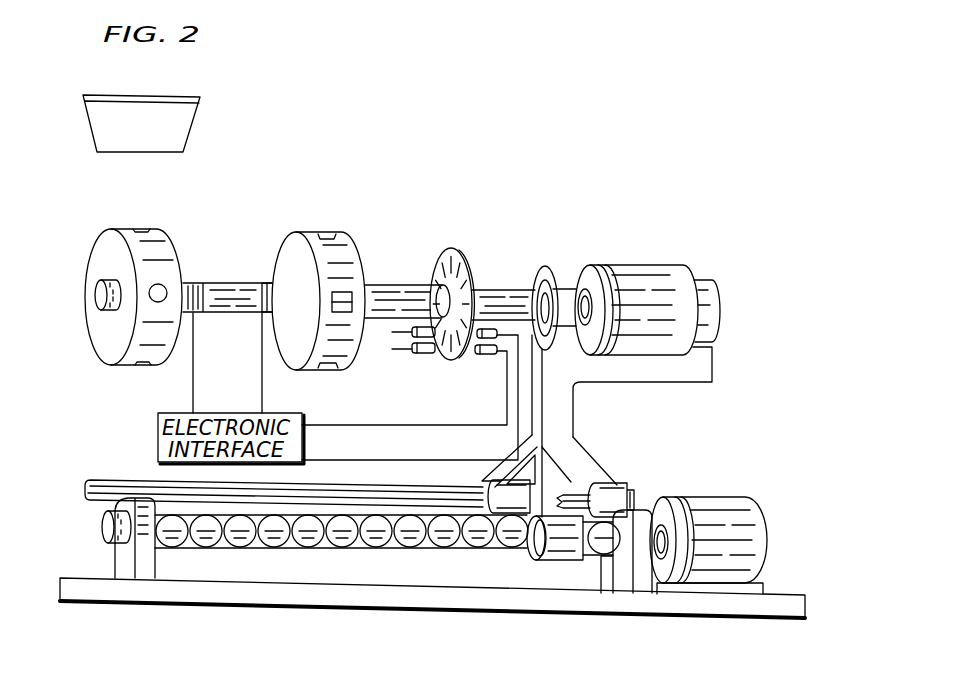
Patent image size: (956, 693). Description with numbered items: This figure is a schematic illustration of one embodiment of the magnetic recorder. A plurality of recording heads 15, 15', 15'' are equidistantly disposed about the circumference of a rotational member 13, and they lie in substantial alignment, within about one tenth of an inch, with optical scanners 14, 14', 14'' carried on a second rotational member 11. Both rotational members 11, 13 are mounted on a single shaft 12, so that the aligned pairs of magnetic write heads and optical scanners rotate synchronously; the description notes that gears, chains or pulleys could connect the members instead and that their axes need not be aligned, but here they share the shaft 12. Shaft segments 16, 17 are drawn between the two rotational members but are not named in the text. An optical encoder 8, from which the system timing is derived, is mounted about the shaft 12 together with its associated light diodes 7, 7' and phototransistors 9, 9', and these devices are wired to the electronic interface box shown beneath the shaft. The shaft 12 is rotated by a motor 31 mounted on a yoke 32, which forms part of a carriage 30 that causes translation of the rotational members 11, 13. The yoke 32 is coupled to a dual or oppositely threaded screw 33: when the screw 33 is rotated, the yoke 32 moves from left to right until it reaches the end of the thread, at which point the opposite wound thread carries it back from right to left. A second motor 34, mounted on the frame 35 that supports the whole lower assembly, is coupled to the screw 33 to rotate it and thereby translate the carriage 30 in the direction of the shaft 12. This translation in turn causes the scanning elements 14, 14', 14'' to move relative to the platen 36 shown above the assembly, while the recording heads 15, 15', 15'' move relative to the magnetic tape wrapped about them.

The light diode 7 is at (494, 316).
The light diode 7' is at (474, 370).
The optical encoder 8 is at (462, 264).
The phototransistor 9 is at (401, 353).
The phototransistor 9' is at (413, 368).
The rotational member 11 is at (171, 245).
The shaft 12 is at (388, 287).
The rotational member 13 is at (350, 256).
The optical scanner 14 is at (107, 267).
The optical scanner 14' is at (112, 210).
The optical scanner 14'' is at (99, 386).
The recording head 15 is at (365, 284).
The recording head 15' is at (311, 215).
The recording head 15'' is at (344, 382).
The shaft 16 is at (204, 282).
The coupling 17 is at (261, 281).
The carriage 30 is at (66, 526).
The motor 31 is at (640, 263).
The yoke 32 is at (560, 413).
The dual or oppositely threaded screw 33 is at (386, 549).
The motor 34 is at (730, 506).
The frame 35 is at (778, 603).
The platen 36 is at (190, 134).